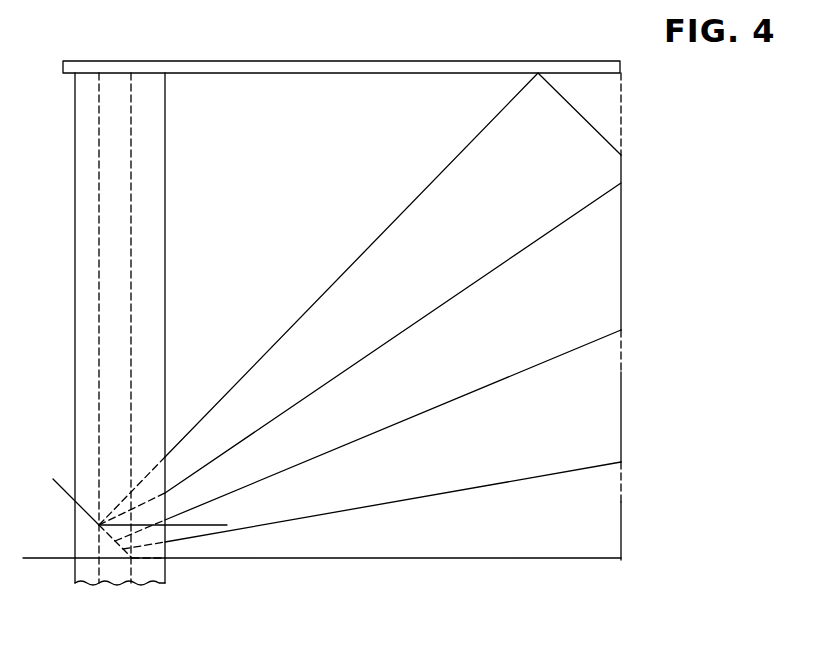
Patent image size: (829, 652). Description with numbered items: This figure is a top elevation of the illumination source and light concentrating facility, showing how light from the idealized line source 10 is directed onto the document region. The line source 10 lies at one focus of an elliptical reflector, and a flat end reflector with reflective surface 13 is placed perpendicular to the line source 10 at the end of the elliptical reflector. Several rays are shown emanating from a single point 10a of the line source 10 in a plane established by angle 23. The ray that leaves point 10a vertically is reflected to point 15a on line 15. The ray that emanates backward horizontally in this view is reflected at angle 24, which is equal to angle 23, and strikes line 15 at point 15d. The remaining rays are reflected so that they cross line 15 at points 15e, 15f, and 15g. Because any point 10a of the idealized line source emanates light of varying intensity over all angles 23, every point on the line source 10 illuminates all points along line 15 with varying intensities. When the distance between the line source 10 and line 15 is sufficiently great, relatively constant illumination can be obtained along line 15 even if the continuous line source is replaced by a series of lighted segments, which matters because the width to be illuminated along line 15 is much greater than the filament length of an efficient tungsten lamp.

The reflective surfaces of flat end reflectors 13 is at (266, 73).
The line source 10 is at (133, 271).
The point on the line source 10a is at (135, 565).
The line 15 is at (621, 393).
The point on line 15 15d is at (621, 155).
The point on line 15 15e is at (621, 183).
The point on line 15 15f is at (621, 330).
The point on line 15 15g is at (621, 462).
The point on line 15 15a is at (621, 560).
The angle 23 is at (57, 490).
The angle 24 is at (184, 444).